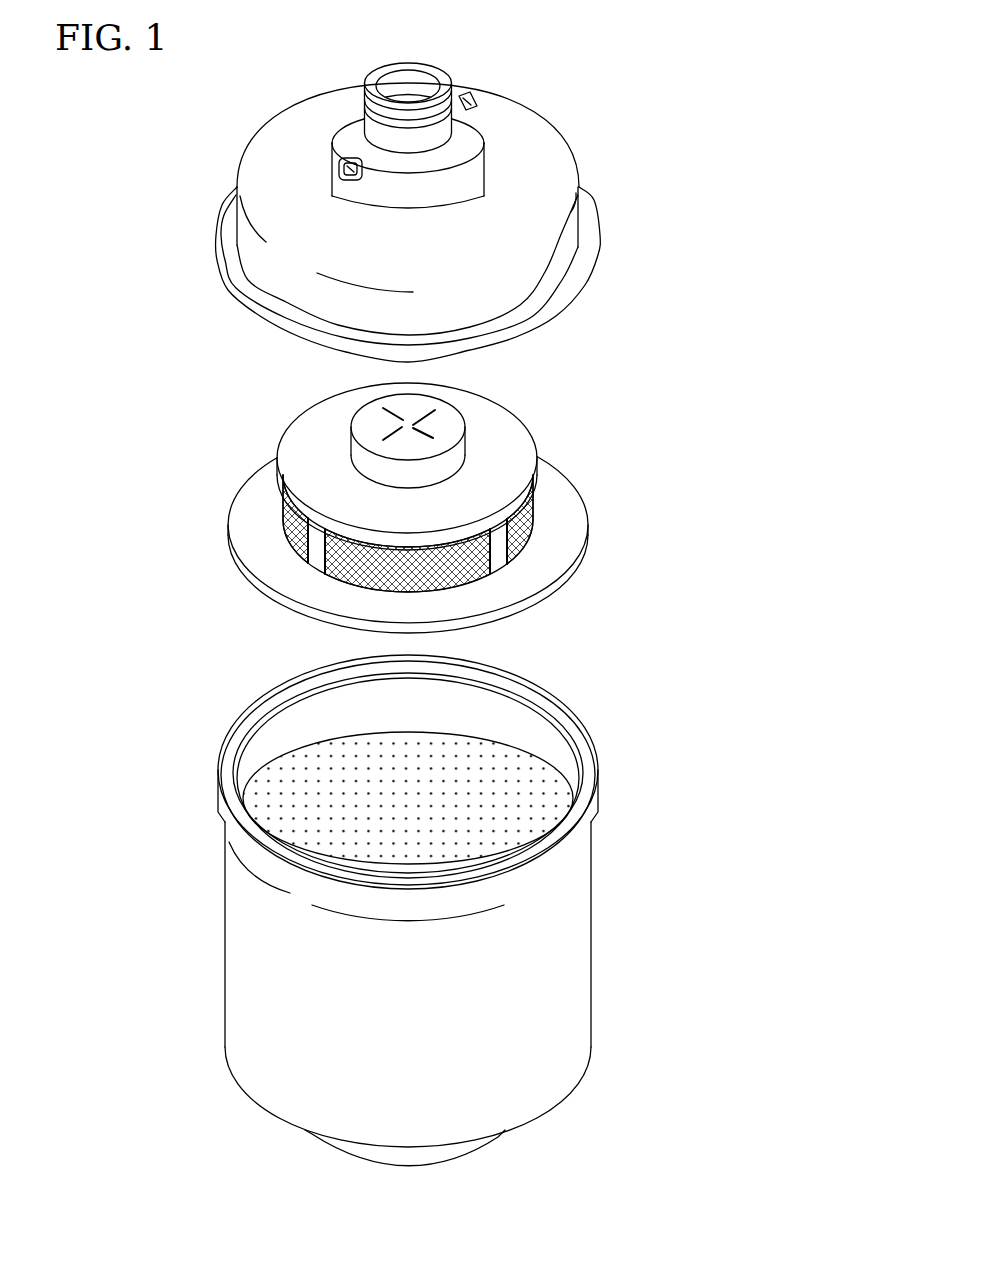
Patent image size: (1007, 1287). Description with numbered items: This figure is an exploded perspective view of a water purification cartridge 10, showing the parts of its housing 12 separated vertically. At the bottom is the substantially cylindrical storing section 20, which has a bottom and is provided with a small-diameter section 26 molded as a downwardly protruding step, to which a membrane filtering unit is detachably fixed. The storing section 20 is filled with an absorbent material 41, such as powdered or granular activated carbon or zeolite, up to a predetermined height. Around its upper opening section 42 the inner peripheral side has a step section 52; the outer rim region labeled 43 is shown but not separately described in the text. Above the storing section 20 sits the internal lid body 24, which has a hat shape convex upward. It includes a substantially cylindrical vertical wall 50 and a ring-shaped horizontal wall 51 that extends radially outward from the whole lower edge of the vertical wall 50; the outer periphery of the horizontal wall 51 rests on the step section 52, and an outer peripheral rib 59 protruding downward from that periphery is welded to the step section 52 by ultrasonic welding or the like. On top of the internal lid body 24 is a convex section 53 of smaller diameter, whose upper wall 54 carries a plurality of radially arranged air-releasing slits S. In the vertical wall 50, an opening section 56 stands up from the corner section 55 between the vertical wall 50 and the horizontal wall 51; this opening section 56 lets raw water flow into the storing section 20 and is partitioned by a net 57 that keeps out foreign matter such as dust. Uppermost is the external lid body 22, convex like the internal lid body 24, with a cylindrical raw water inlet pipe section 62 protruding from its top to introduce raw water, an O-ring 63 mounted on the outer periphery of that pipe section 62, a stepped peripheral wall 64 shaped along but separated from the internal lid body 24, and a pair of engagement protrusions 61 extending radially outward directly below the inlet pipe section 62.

The water purification cartridge 10 is at (170, 309).
The housing 12 is at (401, 596).
The storing section 20 is at (220, 928).
The external lid body 22 is at (583, 162).
The internal lid body 24 is at (501, 430).
The small-diameter section 26 is at (463, 1157).
The absorbent material 41 is at (510, 790).
The upper opening section 42 is at (547, 708).
The outer rim side 43 is at (597, 778).
The vertical wall 50 is at (503, 523).
The horizontal wall 51 is at (562, 485).
The step section 52 is at (242, 738).
The convex section 53 is at (345, 437).
The upper wall 54 is at (372, 421).
The corner section 55 is at (359, 583).
The opening section 56 is at (353, 547).
The net 57 is at (457, 568).
The outer peripheral rib 59 is at (548, 600).
The engagement protrusions 61 is at (461, 93).
The raw water inlet pipe section 62 is at (380, 67).
The O-ring 63 is at (433, 125).
The peripheral wall 64 is at (534, 143).
The air-releasing slits S is at (422, 414).